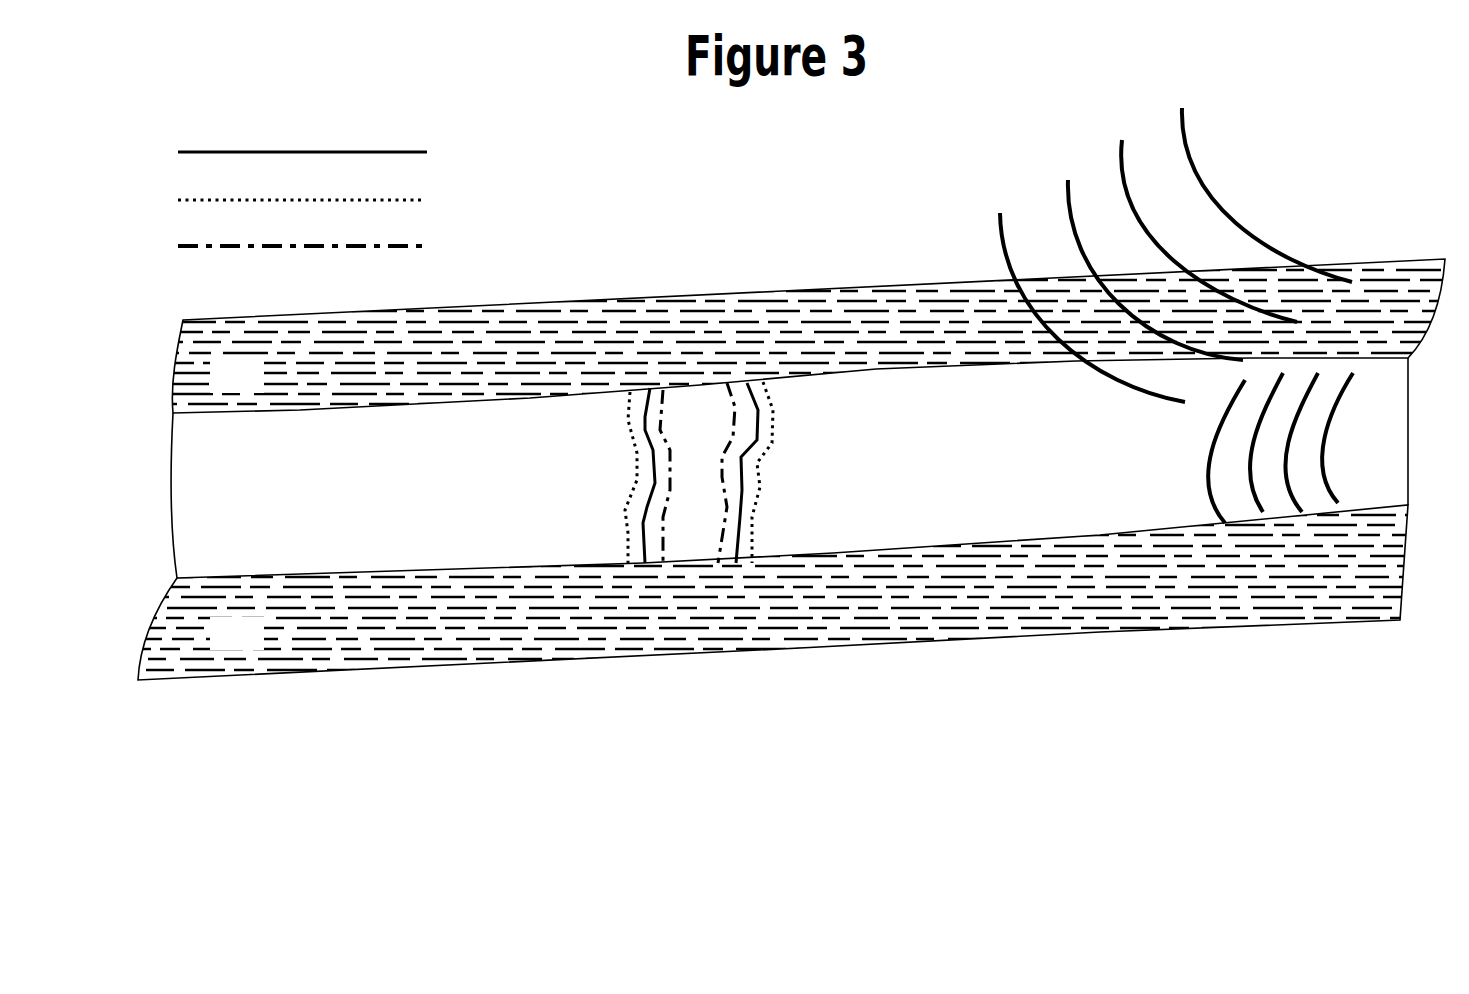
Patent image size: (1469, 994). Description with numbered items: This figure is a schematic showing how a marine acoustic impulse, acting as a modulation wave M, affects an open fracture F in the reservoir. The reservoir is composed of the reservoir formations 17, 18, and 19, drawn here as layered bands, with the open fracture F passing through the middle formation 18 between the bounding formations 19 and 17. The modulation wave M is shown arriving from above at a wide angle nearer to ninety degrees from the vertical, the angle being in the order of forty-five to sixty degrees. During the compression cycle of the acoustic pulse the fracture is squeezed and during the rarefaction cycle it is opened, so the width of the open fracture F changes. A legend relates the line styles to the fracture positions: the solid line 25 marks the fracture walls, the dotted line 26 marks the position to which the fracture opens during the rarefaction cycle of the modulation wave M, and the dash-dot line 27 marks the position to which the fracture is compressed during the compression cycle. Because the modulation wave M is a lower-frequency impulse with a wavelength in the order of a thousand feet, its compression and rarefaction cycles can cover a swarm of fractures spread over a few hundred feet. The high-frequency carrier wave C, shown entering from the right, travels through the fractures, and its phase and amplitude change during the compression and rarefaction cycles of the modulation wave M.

The reservoir formation 17 is at (775, 592).
The reservoir formation 18 is at (789, 468).
The reservoir formation 19 is at (810, 336).
The open fracture width position 25 is at (742, 373).
The opened fracture position 26 is at (785, 465).
The compressed fracture position 27 is at (712, 452).
The modulation wave M is at (1052, 385).
The carrier wave C is at (1171, 462).
The open fracture F is at (628, 644).